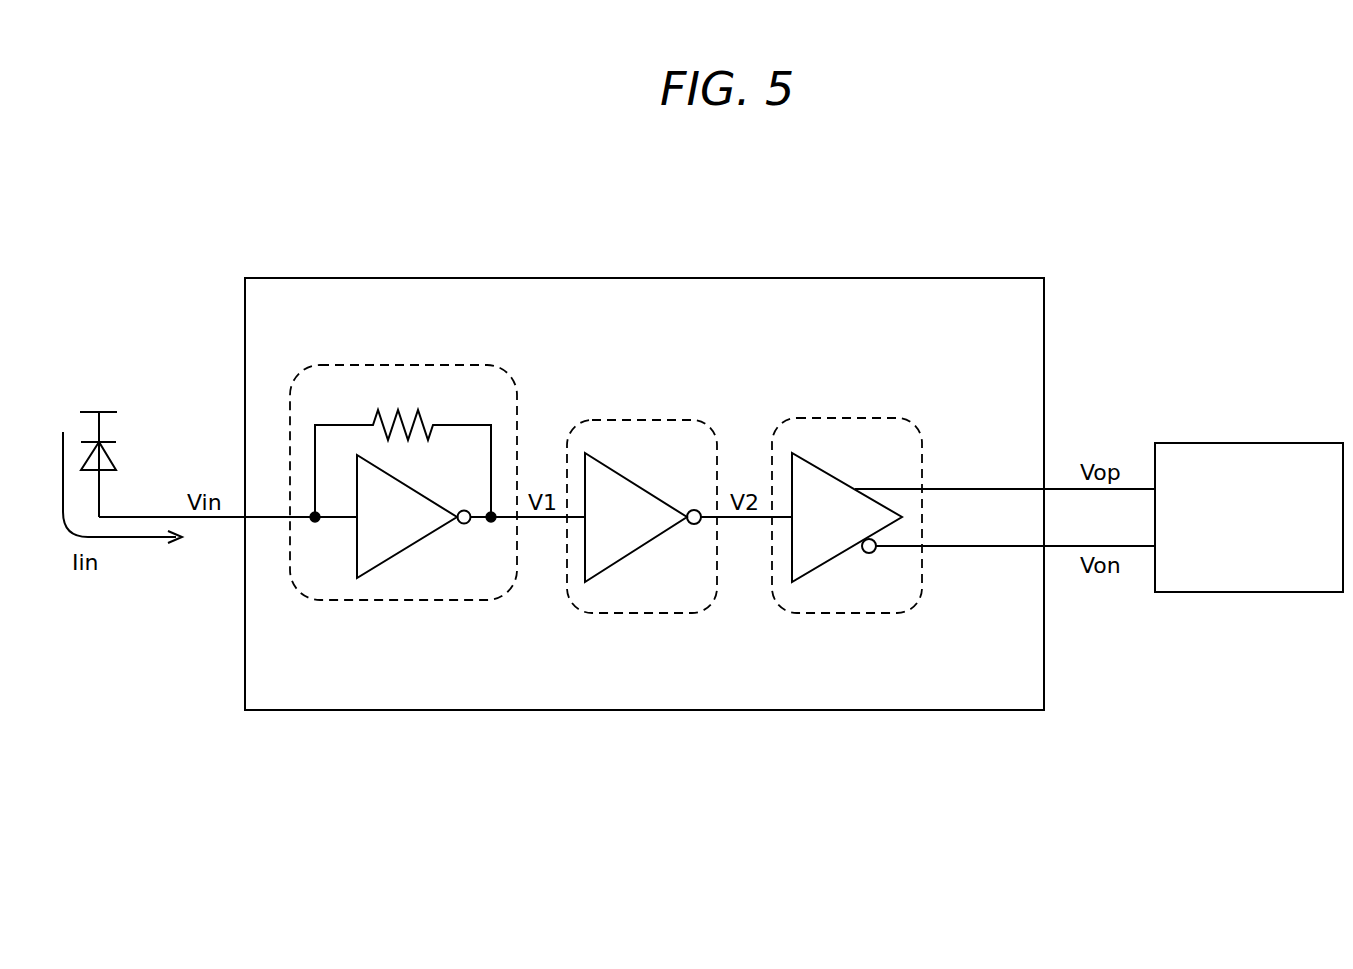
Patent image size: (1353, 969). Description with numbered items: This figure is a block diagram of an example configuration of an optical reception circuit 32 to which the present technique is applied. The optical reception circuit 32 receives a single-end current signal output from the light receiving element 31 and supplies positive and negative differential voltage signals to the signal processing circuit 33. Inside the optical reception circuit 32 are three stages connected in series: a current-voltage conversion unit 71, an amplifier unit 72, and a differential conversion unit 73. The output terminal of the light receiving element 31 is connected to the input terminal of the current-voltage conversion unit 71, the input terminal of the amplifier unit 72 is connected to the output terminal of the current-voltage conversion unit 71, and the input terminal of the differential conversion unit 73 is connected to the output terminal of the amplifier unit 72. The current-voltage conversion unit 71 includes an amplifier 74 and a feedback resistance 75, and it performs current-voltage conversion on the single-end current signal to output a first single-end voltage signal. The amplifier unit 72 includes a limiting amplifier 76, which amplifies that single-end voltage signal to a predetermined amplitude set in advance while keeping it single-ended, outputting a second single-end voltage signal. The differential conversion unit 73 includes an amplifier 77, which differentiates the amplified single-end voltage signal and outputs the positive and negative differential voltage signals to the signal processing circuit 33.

The light receiving element 31 is at (106, 457).
The optical reception circuit 32 is at (645, 278).
The signal processing circuit 33 is at (1250, 443).
The current-voltage conversion unit 71 is at (410, 604).
The amplifier unit 72 is at (637, 616).
The differential conversion unit 73 is at (845, 616).
The amplifier 74 is at (412, 487).
The feedback resistance 75 is at (425, 425).
The limiting amplifier 76 is at (645, 490).
The amplifier 77 is at (835, 482).